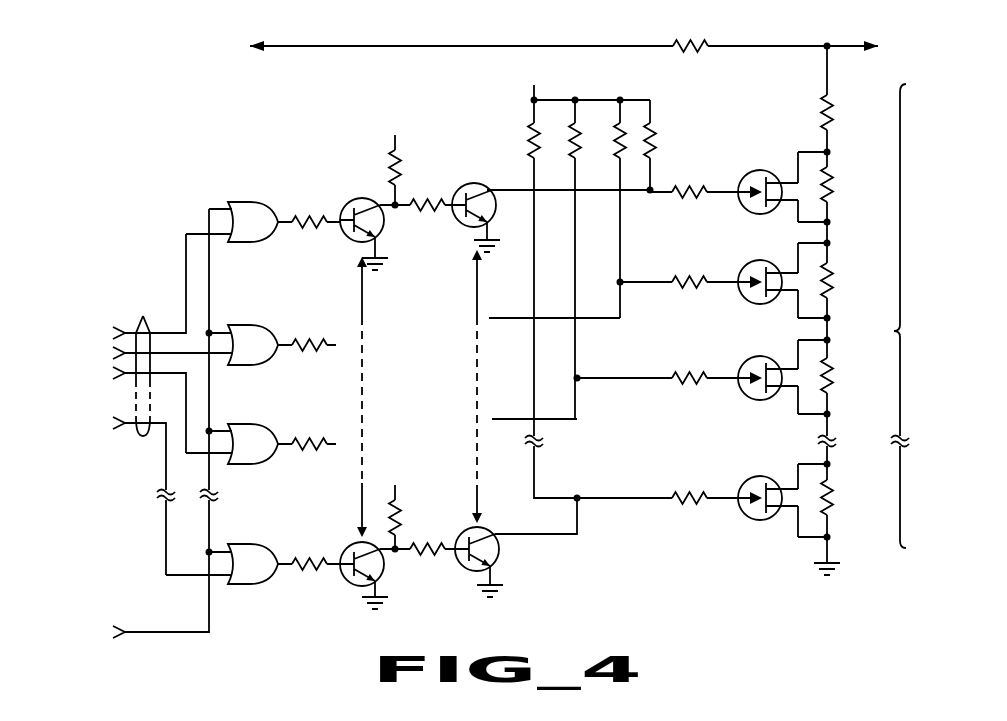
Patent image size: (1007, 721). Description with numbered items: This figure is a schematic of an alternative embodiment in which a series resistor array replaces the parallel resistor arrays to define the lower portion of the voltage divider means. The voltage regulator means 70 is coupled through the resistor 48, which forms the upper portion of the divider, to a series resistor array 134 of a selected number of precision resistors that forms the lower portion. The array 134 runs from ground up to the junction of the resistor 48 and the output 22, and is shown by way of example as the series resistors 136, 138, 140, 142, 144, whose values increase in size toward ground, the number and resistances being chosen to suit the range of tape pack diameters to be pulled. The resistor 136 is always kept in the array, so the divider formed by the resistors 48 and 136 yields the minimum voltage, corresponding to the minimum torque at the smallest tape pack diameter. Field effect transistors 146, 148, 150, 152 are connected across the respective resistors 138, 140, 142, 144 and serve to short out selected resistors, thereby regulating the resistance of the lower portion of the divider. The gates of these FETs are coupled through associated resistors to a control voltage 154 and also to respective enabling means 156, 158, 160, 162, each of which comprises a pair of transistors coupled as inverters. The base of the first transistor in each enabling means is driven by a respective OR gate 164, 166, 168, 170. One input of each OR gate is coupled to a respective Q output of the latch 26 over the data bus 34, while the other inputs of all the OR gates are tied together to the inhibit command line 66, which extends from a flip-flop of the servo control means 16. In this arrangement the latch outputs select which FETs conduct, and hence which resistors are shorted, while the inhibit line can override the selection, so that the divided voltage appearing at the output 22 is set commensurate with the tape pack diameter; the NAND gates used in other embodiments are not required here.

The servo control means 16 is at (60, 636).
The output 22 is at (851, 42).
The latch 26 is at (60, 367).
The data bus 34 is at (143, 316).
The resistor 48 is at (698, 82).
The inhibit command line 66 is at (193, 636).
The voltage regulator means 70 is at (399, 47).
The series resistor array 134 is at (874, 310).
The resistor 136 is at (835, 120).
The resistor 138 is at (835, 197).
The resistor 140 is at (838, 296).
The resistor 142 is at (838, 390).
The resistor 144 is at (838, 509).
The field effect transistor 146 is at (757, 173).
The field effect transistor 148 is at (756, 262).
The field effect transistor 150 is at (756, 357).
The field effect transistor 152 is at (754, 477).
The control voltage 154 is at (537, 85).
The enabling means 156 is at (424, 188).
The enabling means 158 is at (424, 326).
The enabling means 160 is at (424, 428).
The enabling means 162 is at (424, 523).
The OR gate 164 is at (258, 210).
The OR gate 166 is at (258, 340).
The OR gate 168 is at (258, 432).
The OR gate 170 is at (258, 556).